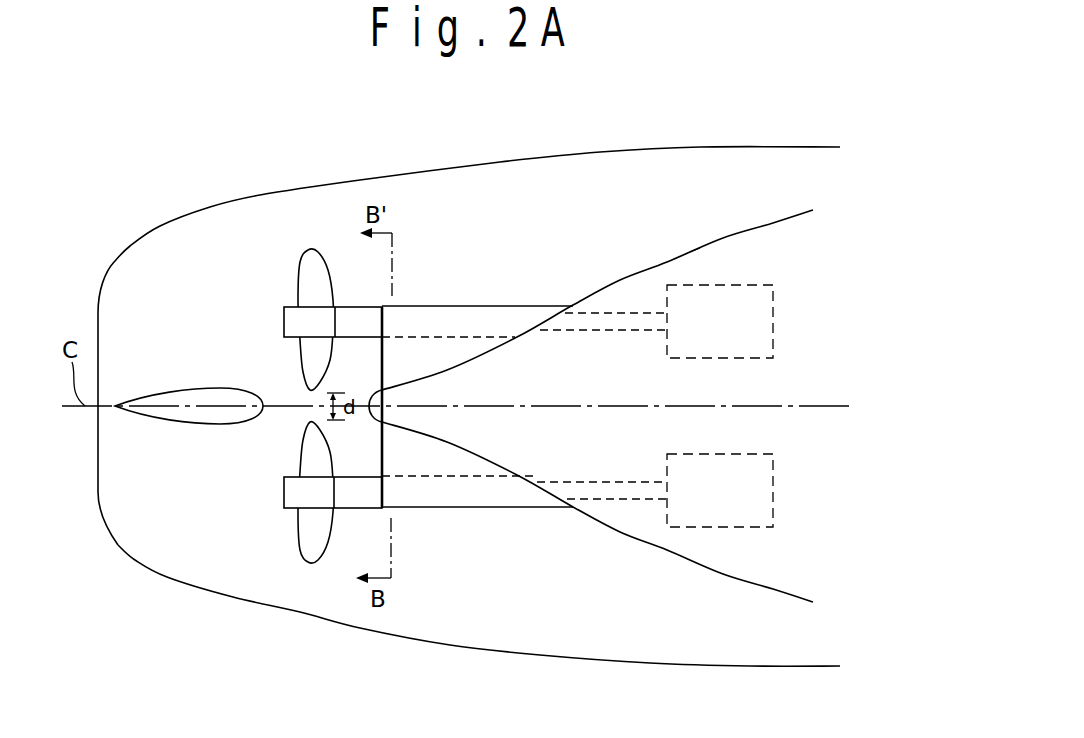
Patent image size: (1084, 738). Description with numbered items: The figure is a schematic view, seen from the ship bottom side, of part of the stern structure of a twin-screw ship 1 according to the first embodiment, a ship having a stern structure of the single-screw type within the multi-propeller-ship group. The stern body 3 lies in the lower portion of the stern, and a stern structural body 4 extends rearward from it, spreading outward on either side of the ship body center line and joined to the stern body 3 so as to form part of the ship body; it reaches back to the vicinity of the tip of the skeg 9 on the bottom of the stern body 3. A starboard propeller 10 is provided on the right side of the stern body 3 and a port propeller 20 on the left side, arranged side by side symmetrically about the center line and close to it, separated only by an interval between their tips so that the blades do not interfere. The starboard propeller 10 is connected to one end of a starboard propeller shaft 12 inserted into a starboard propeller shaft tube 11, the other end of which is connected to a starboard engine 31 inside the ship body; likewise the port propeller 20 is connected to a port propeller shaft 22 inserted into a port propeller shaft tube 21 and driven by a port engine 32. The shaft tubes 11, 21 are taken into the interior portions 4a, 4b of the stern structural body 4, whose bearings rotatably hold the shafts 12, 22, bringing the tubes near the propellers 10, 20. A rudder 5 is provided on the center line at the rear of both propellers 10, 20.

The twin-screw ship 1 is at (178, 180).
The stern body 3 is at (722, 237).
The stern structural body 4 is at (578, 411).
The stern structure body (starboard) 4a is at (455, 352).
The stern structure body (port) 4b is at (455, 460).
The rudder 5 is at (200, 432).
The skeg 9 is at (378, 398).
The starboard propeller 10 is at (298, 280).
The starboard propeller shaft tube 11 is at (475, 310).
The starboard propeller shaft 12 is at (630, 312).
The port propeller 20 is at (298, 537).
The port propeller shaft tube 21 is at (475, 505).
The port propeller shaft 22 is at (630, 530).
The starboard engine 31 is at (773, 312).
The port engine 32 is at (773, 500).